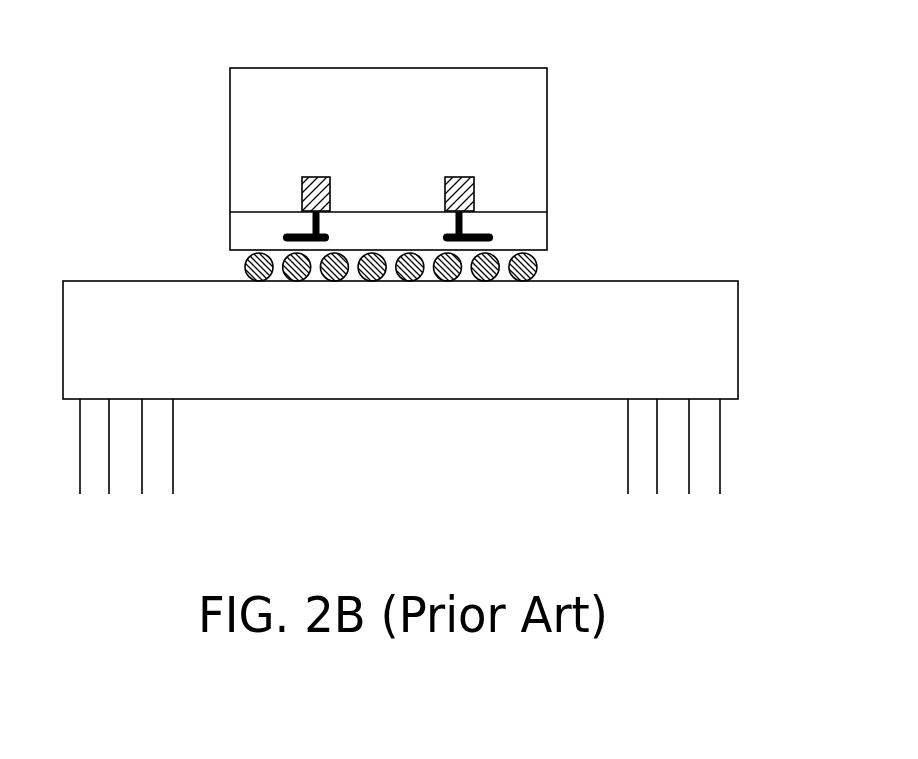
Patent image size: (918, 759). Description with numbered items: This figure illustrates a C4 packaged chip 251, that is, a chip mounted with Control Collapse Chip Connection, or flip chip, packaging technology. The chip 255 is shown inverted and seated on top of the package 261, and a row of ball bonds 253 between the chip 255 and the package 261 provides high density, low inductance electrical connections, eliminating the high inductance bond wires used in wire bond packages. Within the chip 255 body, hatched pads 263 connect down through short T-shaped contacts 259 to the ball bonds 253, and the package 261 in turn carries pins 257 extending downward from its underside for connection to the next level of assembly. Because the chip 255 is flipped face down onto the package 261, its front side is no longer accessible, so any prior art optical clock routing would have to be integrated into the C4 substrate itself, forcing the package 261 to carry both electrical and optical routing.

The C4 packaged chip 251 is at (726, 21).
The ball bonds 253 is at (466, 280).
The chip 255 is at (547, 135).
The pins of substrate 257 is at (123, 497).
The T-shaped leads / contacts 259 is at (447, 224).
The package 261 is at (738, 332).
The bond pads 263 is at (443, 175).